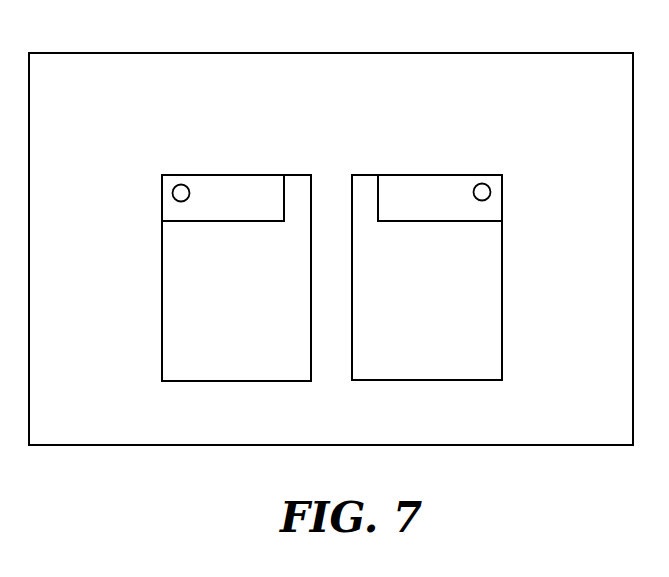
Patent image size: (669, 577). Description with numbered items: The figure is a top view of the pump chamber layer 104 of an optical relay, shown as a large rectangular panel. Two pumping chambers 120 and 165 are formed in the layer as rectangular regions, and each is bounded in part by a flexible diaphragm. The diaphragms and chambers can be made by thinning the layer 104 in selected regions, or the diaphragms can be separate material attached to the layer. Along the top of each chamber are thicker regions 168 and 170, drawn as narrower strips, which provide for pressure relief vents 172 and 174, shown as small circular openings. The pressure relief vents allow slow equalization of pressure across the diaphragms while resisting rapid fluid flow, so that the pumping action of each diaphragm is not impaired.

The pump chamber layer 104 is at (80, 53).
The pumping chamber 165 is at (177, 288).
The thicker region 170 is at (262, 183).
The pressure relief vent 174 is at (180, 184).
The pumping chamber 120 is at (483, 287).
The thicker region 168 is at (400, 183).
The pressure relief vent 172 is at (482, 183).